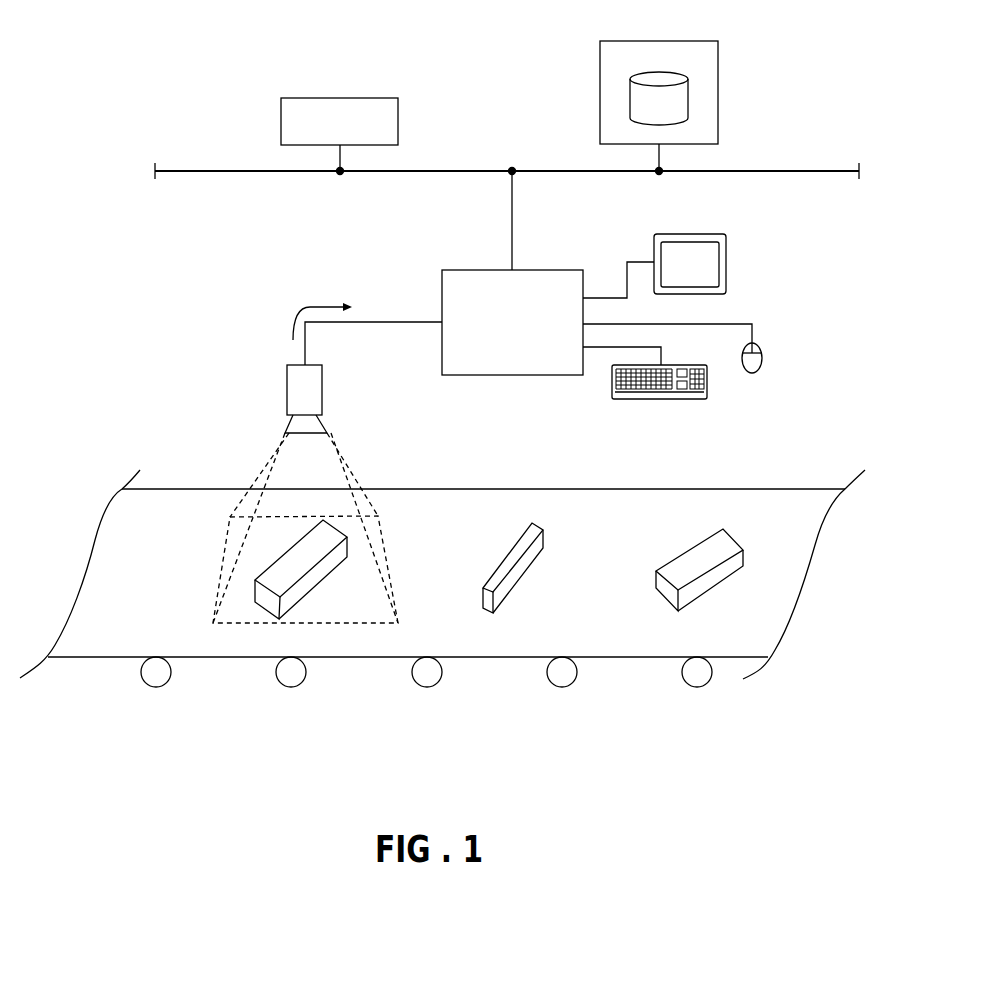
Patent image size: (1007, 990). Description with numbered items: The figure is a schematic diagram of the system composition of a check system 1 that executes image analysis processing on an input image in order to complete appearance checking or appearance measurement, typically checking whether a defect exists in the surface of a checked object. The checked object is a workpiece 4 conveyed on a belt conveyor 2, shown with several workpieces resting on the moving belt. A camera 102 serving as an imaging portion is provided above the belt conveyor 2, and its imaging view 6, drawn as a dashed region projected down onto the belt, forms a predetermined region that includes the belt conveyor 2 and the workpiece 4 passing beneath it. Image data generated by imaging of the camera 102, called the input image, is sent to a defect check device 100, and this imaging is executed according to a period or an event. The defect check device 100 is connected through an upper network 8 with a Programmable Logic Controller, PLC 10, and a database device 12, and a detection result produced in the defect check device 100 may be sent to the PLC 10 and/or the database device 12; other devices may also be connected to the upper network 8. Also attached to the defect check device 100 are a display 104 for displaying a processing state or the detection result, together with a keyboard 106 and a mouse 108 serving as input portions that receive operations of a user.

The check system 1 is at (879, 29).
The belt conveyor 2 is at (786, 507).
The workpiece 4 is at (327, 538).
The imaging view 6 is at (387, 555).
The upper network 8 is at (822, 168).
The Programmable Logic Controller (PLC) 10 is at (370, 98).
The database device 12 is at (693, 41).
The defect check device 100 is at (553, 268).
The camera 102 is at (324, 382).
The display 104 is at (703, 232).
The keyboard 106 is at (670, 398).
The mouse 108 is at (765, 357).